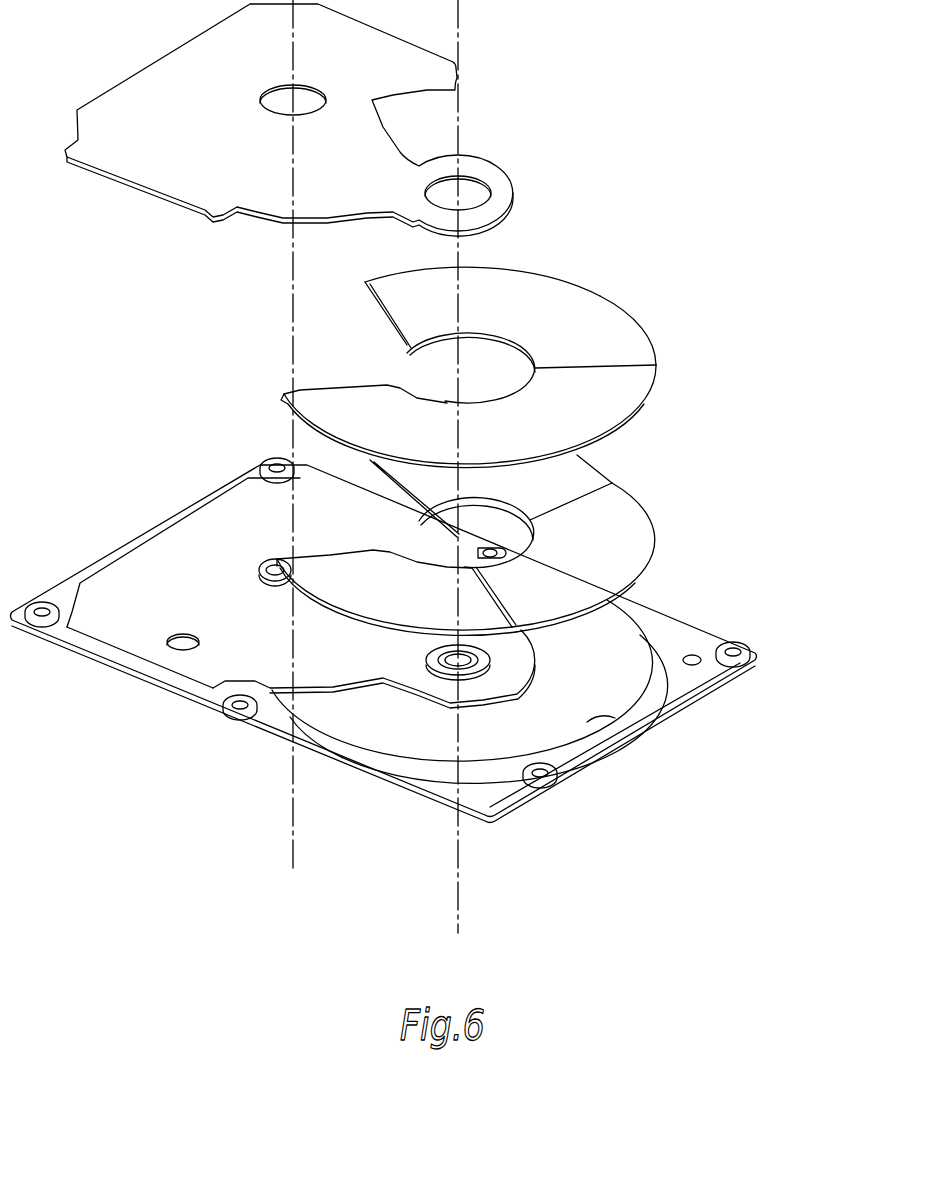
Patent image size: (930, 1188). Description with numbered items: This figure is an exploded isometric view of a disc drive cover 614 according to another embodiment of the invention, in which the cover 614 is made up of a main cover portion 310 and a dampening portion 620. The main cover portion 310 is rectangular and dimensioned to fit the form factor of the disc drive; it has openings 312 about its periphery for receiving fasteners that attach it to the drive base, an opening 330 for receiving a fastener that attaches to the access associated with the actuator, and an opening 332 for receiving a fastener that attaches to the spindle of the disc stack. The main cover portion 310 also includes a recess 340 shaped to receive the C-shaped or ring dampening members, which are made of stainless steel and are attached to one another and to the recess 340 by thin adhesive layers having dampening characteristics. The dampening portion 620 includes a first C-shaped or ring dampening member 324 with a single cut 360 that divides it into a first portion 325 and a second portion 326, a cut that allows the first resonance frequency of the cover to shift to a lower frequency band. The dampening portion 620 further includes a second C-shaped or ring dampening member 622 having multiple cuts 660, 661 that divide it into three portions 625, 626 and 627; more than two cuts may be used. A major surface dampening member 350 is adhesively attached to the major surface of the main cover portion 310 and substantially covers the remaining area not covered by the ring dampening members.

The major surface dampening member 350 is at (447, 62).
The cover 614 is at (648, 218).
The dampening portion 620 is at (517, 337).
The second portion 326 is at (528, 280).
The first C-shaped or ring dampening member 324 is at (628, 318).
The first portion 325 is at (275, 400).
The cut 360 is at (612, 362).
The second C-shaped or ring dampening member 622 is at (507, 530).
The third portion 627 is at (607, 475).
The cut 661 is at (613, 480).
The second portion 626 is at (638, 530).
The first portion 625 is at (347, 600).
The cut 660 is at (493, 593).
The main cover portion 310 is at (407, 640).
The openings 312 is at (737, 652).
The opening 330 is at (280, 557).
The opening 332 is at (448, 657).
The recess 340 is at (627, 717).